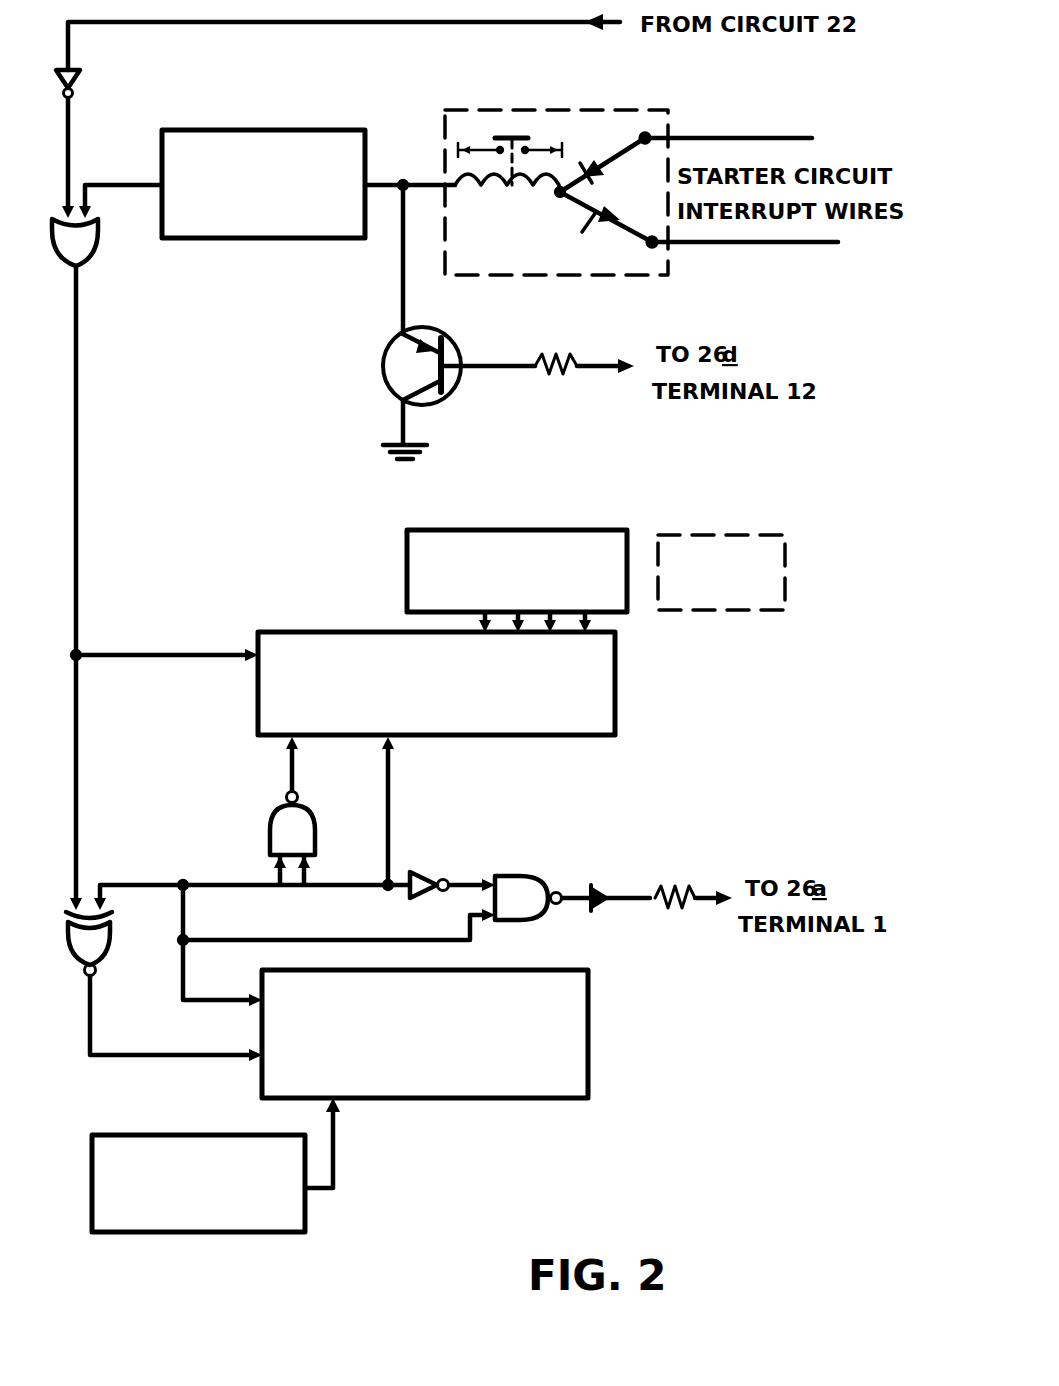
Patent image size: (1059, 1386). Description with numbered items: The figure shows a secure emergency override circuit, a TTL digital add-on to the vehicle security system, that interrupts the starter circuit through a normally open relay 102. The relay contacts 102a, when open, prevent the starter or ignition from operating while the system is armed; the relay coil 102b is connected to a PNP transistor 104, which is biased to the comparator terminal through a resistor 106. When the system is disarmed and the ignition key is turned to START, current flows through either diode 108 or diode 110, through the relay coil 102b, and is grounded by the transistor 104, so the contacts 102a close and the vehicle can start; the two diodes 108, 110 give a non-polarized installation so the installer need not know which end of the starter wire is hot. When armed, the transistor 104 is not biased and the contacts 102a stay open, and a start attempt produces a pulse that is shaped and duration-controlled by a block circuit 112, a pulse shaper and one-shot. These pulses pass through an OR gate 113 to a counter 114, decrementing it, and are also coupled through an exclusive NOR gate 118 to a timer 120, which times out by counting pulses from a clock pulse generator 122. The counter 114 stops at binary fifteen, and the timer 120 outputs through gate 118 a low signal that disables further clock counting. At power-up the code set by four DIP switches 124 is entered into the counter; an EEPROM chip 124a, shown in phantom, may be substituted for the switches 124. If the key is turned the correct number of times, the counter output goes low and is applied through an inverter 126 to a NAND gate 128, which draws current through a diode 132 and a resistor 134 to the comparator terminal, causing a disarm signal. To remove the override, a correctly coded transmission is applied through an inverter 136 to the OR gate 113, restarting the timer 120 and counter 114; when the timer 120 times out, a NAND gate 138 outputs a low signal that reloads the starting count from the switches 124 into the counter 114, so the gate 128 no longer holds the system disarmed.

The relay 102 is at (514, 110).
The relay contacts 102a is at (497, 147).
The relay coil 102b is at (510, 195).
The PNP transistor 104 is at (386, 344).
The resistor 106 is at (550, 359).
The diode 108 is at (586, 152).
The diode 110 is at (599, 224).
The block circuit 112 is at (208, 118).
The OR gate 113 is at (90, 255).
The counter 114 is at (348, 632).
The exclusive NOR gate 118 is at (100, 948).
The timer 120 is at (462, 1100).
The clock pulse generator 122 is at (240, 1235).
The DIP switches 124 is at (502, 530).
The EEPROM chip 124a is at (752, 535).
The inverter 126 is at (422, 870).
The NAND gate 128 is at (522, 874).
The diode 132 is at (604, 888).
The resistor 134 is at (676, 886).
The inverter 136 is at (78, 75).
The NAND gate 138 is at (268, 816).